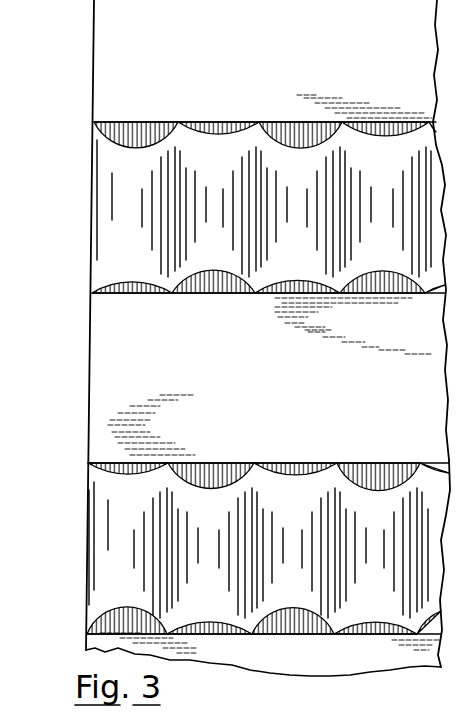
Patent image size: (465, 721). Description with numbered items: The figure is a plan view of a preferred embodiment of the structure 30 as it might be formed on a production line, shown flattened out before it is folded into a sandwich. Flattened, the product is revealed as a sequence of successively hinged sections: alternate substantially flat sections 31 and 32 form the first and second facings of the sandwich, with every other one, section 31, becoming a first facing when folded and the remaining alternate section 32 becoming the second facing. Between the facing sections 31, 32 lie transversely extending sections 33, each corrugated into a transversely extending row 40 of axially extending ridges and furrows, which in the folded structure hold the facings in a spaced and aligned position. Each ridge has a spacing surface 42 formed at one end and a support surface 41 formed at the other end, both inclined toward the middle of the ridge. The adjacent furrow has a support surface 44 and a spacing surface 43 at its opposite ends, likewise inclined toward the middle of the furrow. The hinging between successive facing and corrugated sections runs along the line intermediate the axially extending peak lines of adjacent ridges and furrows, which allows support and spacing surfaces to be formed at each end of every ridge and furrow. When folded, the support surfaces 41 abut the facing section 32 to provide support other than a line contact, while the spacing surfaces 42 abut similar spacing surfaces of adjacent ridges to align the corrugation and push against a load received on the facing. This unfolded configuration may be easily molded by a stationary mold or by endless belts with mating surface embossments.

The structure 30 is at (78, 411).
The flat section 31 is at (107, 40).
The flat section 32 is at (94, 361).
The transversely extending section 33 is at (94, 201).
The transverse row of ridges and furrows 40 is at (126, 232).
The support surface 41 is at (138, 290).
The spacing surface 42 is at (143, 108).
The spacing surface 43 is at (202, 290).
The support surface 44 is at (222, 108).